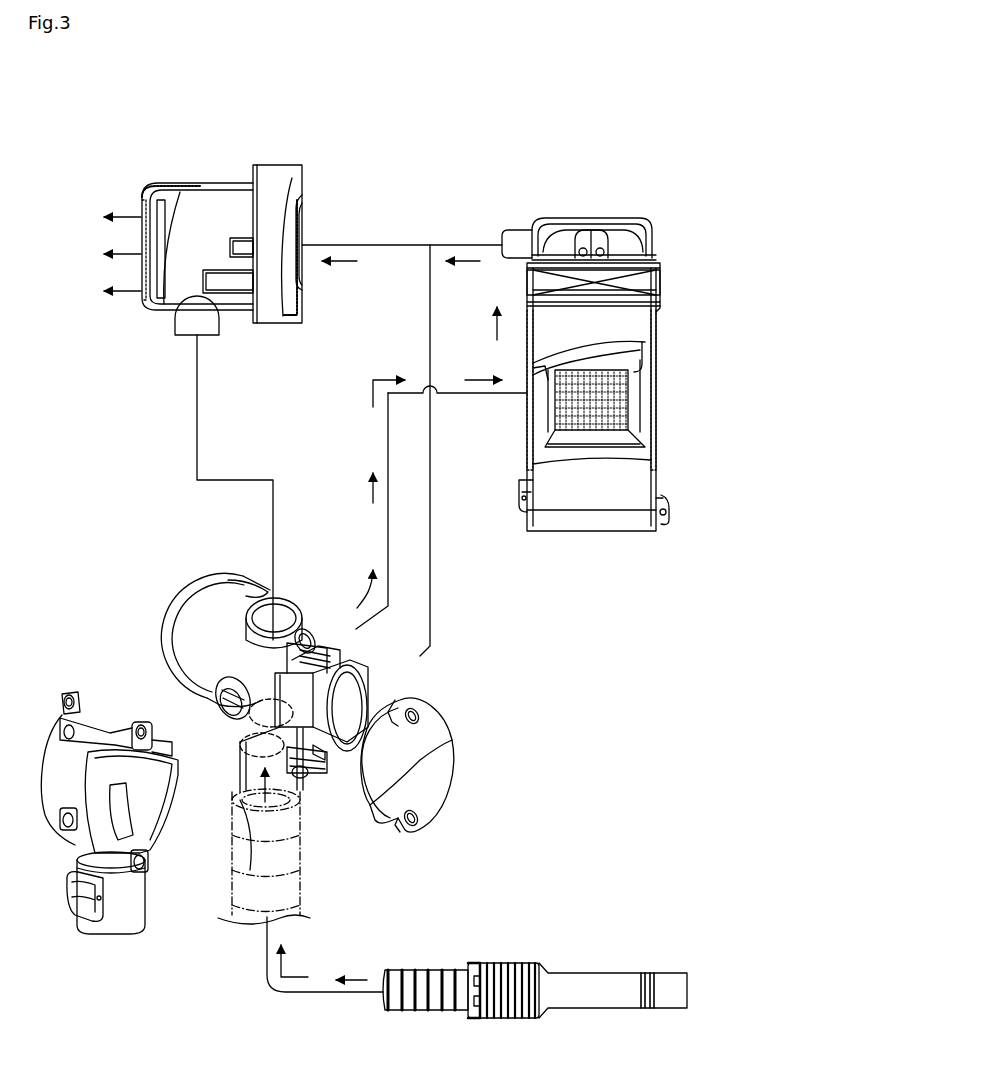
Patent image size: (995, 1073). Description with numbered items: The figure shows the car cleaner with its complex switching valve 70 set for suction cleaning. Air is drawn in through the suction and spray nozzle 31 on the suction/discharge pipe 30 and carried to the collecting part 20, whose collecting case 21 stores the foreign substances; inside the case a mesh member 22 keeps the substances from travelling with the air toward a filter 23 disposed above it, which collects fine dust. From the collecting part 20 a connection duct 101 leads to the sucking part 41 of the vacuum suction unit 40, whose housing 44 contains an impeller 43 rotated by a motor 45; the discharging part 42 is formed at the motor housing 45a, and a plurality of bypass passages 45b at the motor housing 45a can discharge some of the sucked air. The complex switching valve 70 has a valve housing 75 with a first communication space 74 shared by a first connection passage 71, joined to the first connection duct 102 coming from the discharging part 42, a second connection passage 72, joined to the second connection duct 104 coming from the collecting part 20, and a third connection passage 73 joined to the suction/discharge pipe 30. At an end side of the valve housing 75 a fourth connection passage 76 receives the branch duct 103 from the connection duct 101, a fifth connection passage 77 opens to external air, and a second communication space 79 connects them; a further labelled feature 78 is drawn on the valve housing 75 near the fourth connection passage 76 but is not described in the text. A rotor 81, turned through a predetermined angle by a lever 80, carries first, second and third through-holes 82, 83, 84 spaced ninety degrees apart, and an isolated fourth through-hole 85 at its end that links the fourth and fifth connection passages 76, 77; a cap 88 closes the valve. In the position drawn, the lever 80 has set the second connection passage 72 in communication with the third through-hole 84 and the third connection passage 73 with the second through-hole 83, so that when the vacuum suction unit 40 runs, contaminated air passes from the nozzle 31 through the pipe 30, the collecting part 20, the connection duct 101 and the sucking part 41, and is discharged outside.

The collecting part 20 is at (672, 386).
The collecting case 21 is at (537, 472).
The mesh member 22 is at (555, 408).
The filter 23 is at (645, 283).
The suction/discharge pipe 30 is at (345, 946).
The suction and spray nozzle 31 is at (582, 981).
The vacuum suction unit 40 is at (253, 126).
The sucking part 41 is at (310, 218).
The discharging part 42 is at (135, 189).
The impeller 43 is at (284, 317).
The housing 44 is at (284, 173).
The motor 45 is at (216, 169).
The motor housing 45a is at (162, 304).
The bypass passages 45b is at (141, 281).
The complex switching valve 70 is at (473, 701).
The first connection passage 71 is at (292, 628).
The second connection passage 72 is at (318, 630).
The third connection passage 73 is at (252, 862).
The first communication space 74 is at (274, 639).
The valve housing 75 is at (83, 688).
The fourth connection passage 76 is at (366, 701).
The fifth connection passage 77 is at (112, 810).
The coupling rib 78 is at (370, 680).
The second communication space 79 is at (320, 762).
The lever 80 is at (242, 581).
The rotor 81 is at (200, 672).
The first through-hole 82 is at (228, 700).
The second through-hole 83 is at (256, 731).
The third through-hole 84 is at (241, 770).
The fourth through-hole 85 is at (345, 762).
The cap 88 is at (432, 775).
The connection duct 101 is at (388, 245).
The first connection duct 102 is at (198, 406).
The branch duct 103 is at (432, 522).
The second connection duct 104 is at (422, 391).